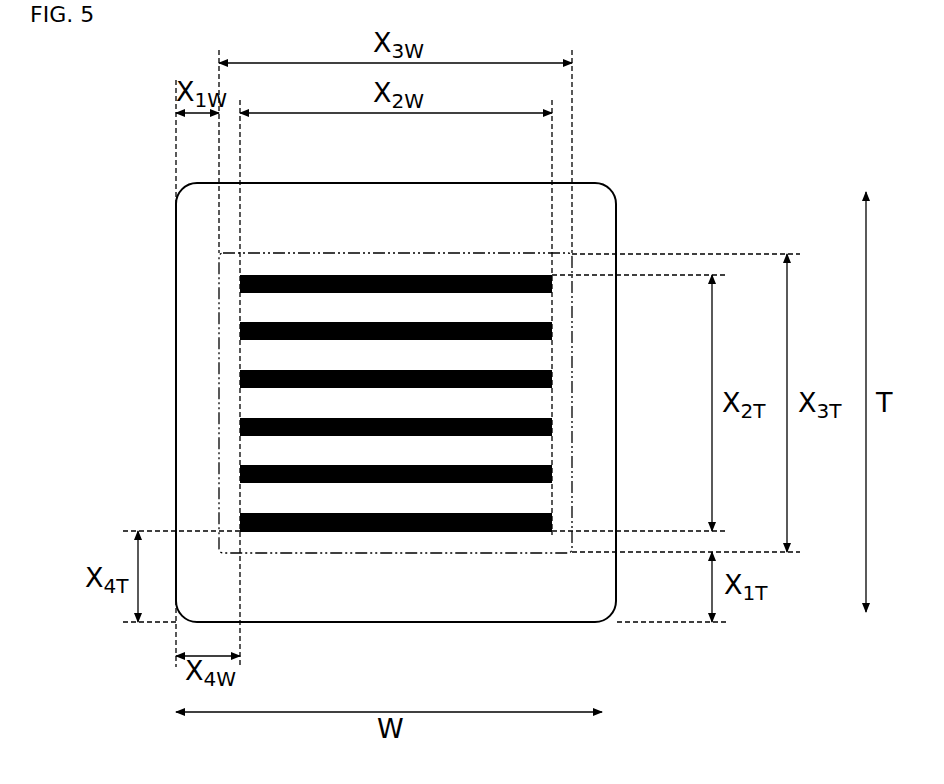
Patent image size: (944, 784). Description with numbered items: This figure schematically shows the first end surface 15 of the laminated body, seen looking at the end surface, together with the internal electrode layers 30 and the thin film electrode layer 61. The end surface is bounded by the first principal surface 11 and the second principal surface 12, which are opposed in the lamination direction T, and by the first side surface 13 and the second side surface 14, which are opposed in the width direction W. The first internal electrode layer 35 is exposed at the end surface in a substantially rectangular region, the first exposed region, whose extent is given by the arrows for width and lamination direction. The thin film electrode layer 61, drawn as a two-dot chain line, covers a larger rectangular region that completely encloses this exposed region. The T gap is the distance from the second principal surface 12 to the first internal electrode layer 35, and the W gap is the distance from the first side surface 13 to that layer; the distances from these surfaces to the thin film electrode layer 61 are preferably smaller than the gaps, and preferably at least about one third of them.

The first principal surface 11 is at (328, 183).
The second principal surface 12 is at (328, 623).
The first side surface 13 is at (176, 372).
The second side surface 14 is at (617, 430).
The first end surface 15 is at (186, 229).
The internal electrode layers 30 is at (547, 650).
The first internal electrode layer 35 is at (493, 532).
The thin film electrode layer 61 is at (372, 553).